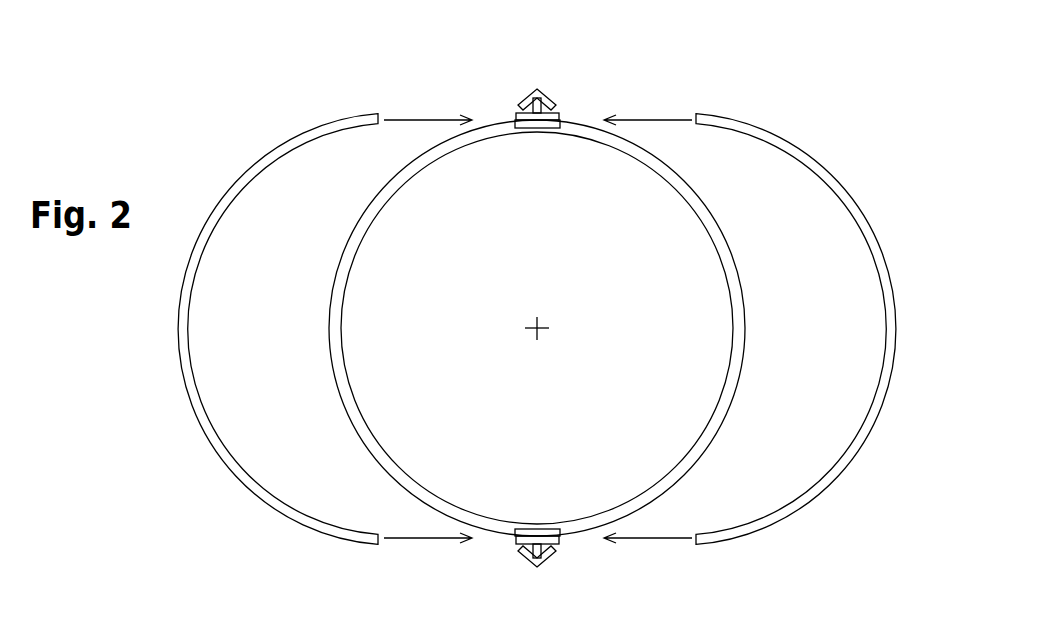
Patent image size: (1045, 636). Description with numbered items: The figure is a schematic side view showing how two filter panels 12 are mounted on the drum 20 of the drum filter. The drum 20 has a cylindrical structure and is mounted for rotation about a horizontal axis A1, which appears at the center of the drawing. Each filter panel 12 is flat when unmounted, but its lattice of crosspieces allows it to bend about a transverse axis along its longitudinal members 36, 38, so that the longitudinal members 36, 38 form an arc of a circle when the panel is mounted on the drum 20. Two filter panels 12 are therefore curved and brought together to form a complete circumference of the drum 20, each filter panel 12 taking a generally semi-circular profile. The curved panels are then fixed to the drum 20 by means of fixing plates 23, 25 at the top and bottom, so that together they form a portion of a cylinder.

The drum 20 is at (705, 85).
The filter panel 12 is at (242, 164).
The longitudinal member 36 is at (879, 242).
The longitudinal member 38 is at (206, 223).
The fixing plate 23 is at (556, 100).
The fixing plate 25 is at (556, 564).
The horizontal axis A1 is at (540, 327).